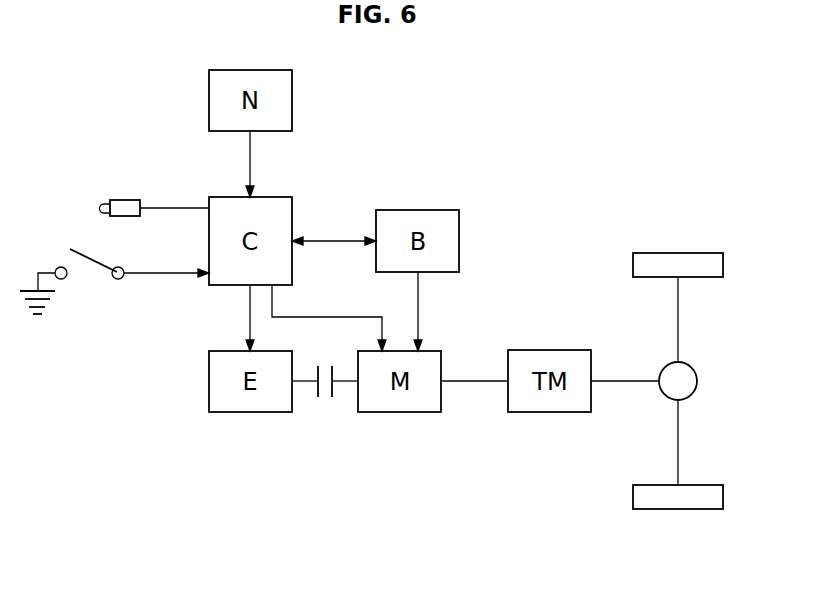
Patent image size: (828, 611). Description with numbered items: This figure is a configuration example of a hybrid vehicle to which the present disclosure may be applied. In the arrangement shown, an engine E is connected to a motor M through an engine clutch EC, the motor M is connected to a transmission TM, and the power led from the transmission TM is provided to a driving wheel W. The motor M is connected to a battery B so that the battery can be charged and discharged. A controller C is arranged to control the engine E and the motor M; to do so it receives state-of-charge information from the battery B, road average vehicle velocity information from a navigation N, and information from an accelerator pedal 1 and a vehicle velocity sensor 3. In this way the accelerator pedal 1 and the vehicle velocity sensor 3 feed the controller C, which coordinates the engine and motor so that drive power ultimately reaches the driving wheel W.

The accelerator pedal 1 is at (78, 250).
The vehicle velocity sensor 3 is at (128, 201).
The driving wheel W is at (691, 261).